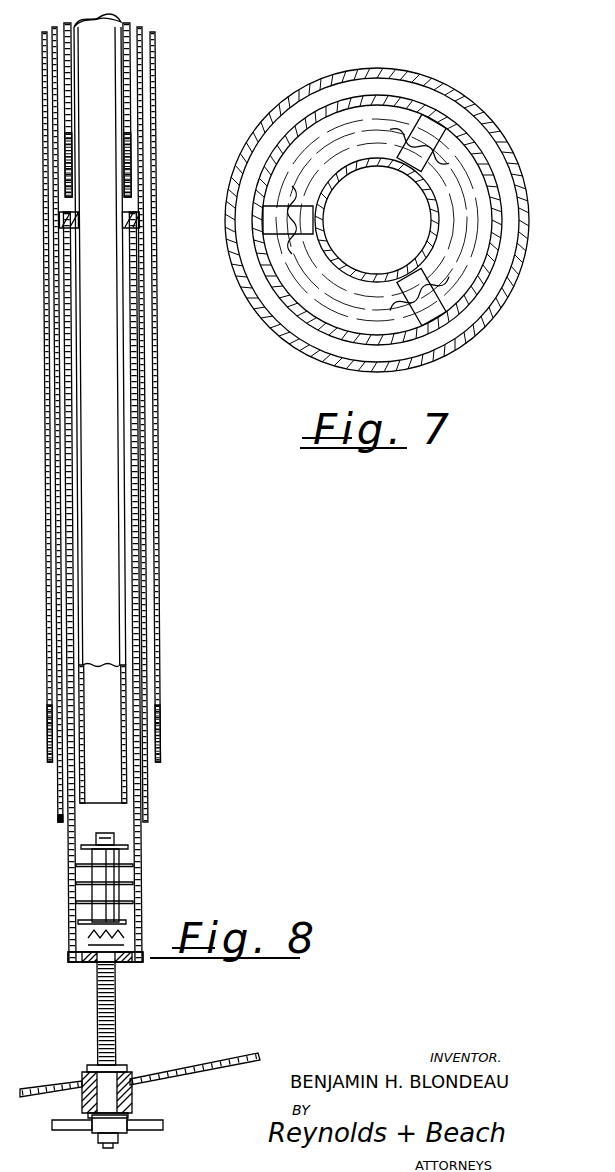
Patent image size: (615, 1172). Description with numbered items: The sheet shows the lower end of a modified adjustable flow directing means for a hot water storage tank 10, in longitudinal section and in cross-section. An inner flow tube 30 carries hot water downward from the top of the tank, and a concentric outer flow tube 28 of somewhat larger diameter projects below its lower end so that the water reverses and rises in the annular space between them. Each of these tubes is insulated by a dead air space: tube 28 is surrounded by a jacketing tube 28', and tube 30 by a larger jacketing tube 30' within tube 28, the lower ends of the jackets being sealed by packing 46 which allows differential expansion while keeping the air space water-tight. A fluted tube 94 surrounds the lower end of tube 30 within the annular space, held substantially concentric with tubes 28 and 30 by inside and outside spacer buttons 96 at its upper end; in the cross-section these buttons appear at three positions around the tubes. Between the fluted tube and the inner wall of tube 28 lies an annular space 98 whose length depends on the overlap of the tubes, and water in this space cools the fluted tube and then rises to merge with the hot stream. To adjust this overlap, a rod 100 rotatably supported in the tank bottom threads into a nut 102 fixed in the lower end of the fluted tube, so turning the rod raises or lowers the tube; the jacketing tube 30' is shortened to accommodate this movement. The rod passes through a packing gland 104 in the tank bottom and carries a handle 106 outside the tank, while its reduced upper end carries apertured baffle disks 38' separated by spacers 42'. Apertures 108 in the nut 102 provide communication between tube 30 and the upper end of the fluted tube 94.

In FIG. 8, the tank 10 is at (185, 1072).
In FIG. 7, the outer flow tube 28 is at (397, 220).
In FIG. 8, the outer flow tube 28 is at (123, 424).
In FIG. 7, the jacketing tube 28' is at (377, 220).
In FIG. 8, the jacketing tube 28' is at (125, 397).
In FIG. 7, the inner flow tube 30 is at (377, 220).
In FIG. 8, the inner flow tube 30 is at (135, 408).
In FIG. 8, the jacketing tube 30' is at (130, 110).
In FIG. 8, the baffle disks 38' is at (74, 895).
In FIG. 8, the spacers 42' is at (146, 877).
In FIG. 8, the packing 46 is at (125, 133).
In FIG. 7, the fluted tube 94 is at (443, 150).
In FIG. 8, the fluted tube 94 is at (133, 415).
In FIG. 7, the spacer buttons 96 is at (315, 213).
In FIG. 8, the spacer buttons 96 is at (63, 227).
In FIG. 7, the annular space 98 is at (275, 243).
In FIG. 8, the annular space 98 is at (65, 815).
In FIG. 8, the rod 100 is at (115, 998).
In FIG. 8, the nut 102 is at (77, 963).
In FIG. 8, the packing gland 104 is at (85, 1082).
In FIG. 8, the handle 106 is at (75, 1127).
In FIG. 8, the apertures 108 is at (125, 963).